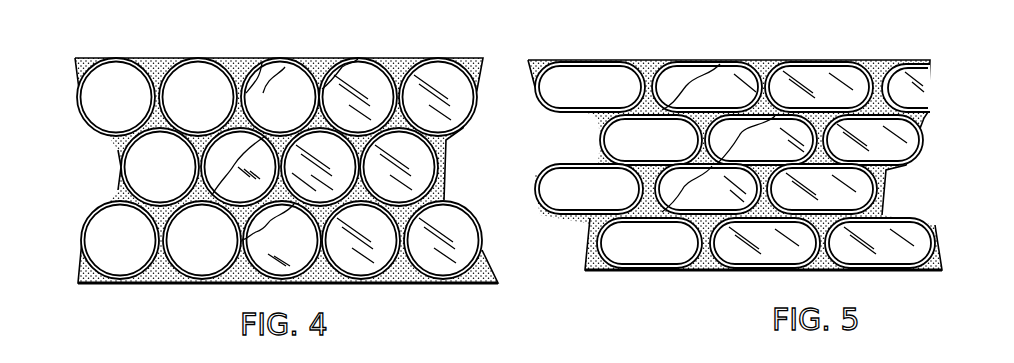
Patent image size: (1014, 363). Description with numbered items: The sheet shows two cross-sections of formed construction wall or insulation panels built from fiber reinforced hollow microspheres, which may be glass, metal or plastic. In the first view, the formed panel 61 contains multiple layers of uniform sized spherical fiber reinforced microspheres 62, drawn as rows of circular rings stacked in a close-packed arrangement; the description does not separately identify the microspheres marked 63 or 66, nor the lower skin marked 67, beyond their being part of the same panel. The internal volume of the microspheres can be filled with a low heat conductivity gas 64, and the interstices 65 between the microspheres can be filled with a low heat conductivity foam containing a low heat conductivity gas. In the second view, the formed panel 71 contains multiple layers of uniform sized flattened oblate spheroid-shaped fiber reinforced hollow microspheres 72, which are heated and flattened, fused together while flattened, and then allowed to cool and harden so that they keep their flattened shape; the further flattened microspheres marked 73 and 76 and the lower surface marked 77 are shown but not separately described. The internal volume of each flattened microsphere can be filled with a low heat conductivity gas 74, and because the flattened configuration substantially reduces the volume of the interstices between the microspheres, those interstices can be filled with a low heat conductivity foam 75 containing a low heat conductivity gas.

In FIG. 4, the formed panel 61 is at (262, 161).
In FIG. 4, the fiber reinforced microspheres 62 is at (78, 101).
In FIG. 4, the hollow tube 63 is at (126, 174).
In FIG. 4, the low heat conductivity gas 64 is at (106, 226).
In FIG. 4, the interstices 65 is at (250, 74).
In FIG. 4, the filled tube 66 is at (394, 62).
In FIG. 4, the face sheet 67 is at (186, 284).
In FIG. 5, the formed panel 71 is at (719, 165).
In FIG. 5, the flattened oblate spheroid-shaped fiber reinforced hollow microspheres 72 is at (537, 96).
In FIG. 5, the flattened hollow tube 73 is at (602, 154).
In FIG. 5, the low heat conductivity gas 74 is at (608, 241).
In FIG. 5, the low heat conductivity foam 75 is at (645, 62).
In FIG. 5, the filled flattened tube 76 is at (779, 62).
In FIG. 5, the face sheet 77 is at (720, 272).